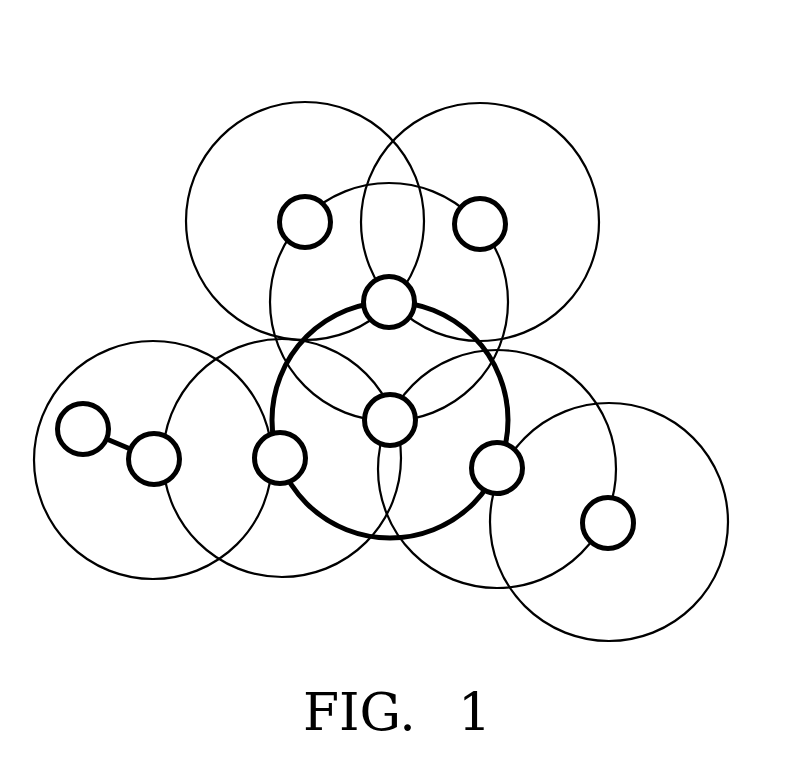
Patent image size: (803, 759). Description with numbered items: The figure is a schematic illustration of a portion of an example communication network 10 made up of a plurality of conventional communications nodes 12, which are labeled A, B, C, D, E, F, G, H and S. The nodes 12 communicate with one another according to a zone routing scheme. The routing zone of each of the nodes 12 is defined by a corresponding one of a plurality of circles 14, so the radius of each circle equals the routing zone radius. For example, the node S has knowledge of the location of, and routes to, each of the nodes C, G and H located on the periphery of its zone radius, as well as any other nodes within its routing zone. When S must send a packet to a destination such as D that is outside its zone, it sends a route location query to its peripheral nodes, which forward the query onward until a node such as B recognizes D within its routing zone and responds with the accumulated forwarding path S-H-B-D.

The network 10 is at (381, 343).
The communications nodes 12 is at (363, 297).
The circles 14 is at (346, 190).